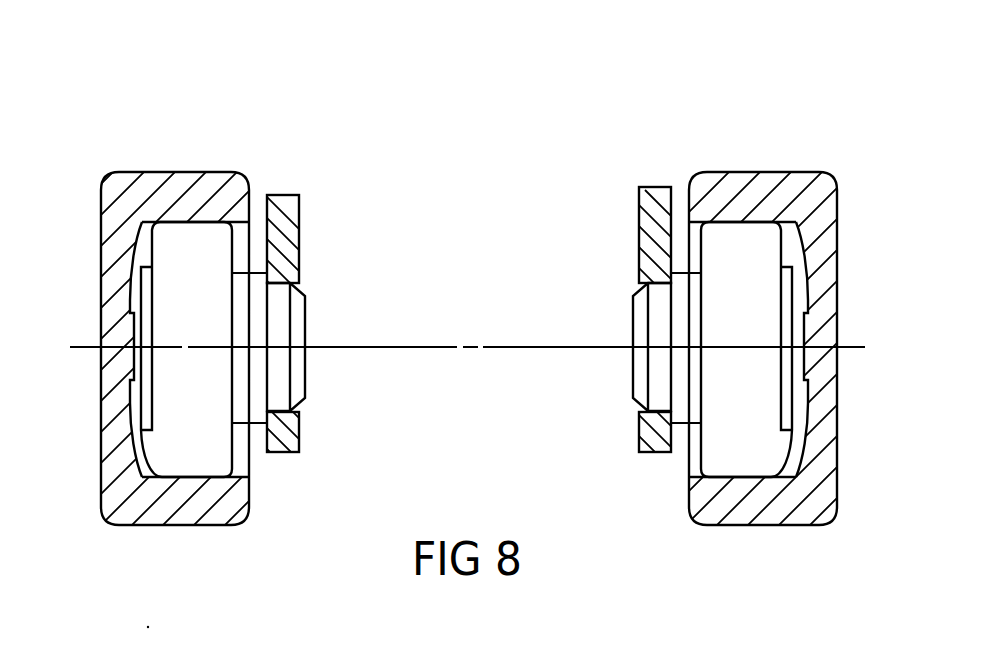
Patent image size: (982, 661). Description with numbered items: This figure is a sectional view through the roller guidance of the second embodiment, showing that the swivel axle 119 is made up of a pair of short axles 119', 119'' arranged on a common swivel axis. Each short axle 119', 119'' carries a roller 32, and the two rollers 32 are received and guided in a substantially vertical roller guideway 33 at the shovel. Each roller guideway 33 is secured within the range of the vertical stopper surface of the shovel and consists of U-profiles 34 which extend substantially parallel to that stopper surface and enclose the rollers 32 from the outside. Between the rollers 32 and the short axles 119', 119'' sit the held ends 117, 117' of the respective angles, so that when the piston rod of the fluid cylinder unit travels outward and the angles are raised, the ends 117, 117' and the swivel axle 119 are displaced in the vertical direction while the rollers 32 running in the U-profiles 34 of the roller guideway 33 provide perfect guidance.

The roller guideway 33 is at (186, 157).
The U-profile 34 is at (128, 198).
The roller 32 is at (208, 457).
The end of angle 117 is at (269, 298).
The end of angle 117' is at (654, 298).
The swivel axle 119 is at (467, 304).
The short axle 119' is at (323, 347).
The short axle 119'' is at (608, 347).